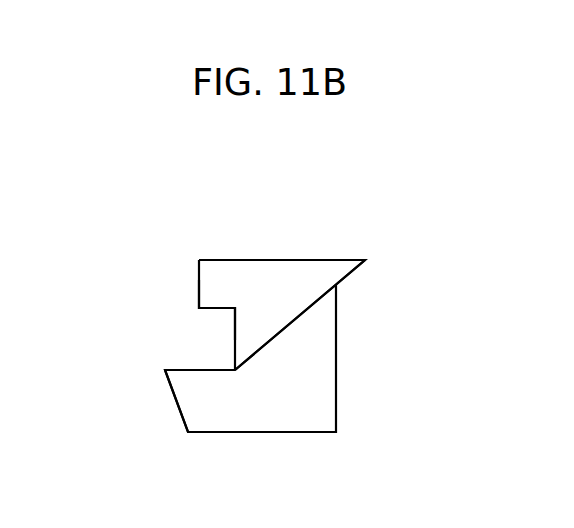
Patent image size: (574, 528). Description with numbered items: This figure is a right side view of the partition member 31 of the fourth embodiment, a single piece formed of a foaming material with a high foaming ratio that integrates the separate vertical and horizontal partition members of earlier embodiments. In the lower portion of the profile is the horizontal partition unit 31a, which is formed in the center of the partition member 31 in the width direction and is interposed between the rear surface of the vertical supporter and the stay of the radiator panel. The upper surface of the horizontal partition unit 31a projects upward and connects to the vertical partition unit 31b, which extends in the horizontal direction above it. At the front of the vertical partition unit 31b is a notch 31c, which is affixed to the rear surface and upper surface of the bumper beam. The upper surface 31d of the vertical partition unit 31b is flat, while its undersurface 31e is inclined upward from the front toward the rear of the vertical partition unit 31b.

The partition member 31 is at (310, 242).
The horizontal partition unit 31a is at (220, 423).
The vertical partition unit 31b is at (273, 320).
The notch 31c is at (208, 333).
The upper surface 31d is at (240, 260).
The undersurface 31e is at (307, 310).